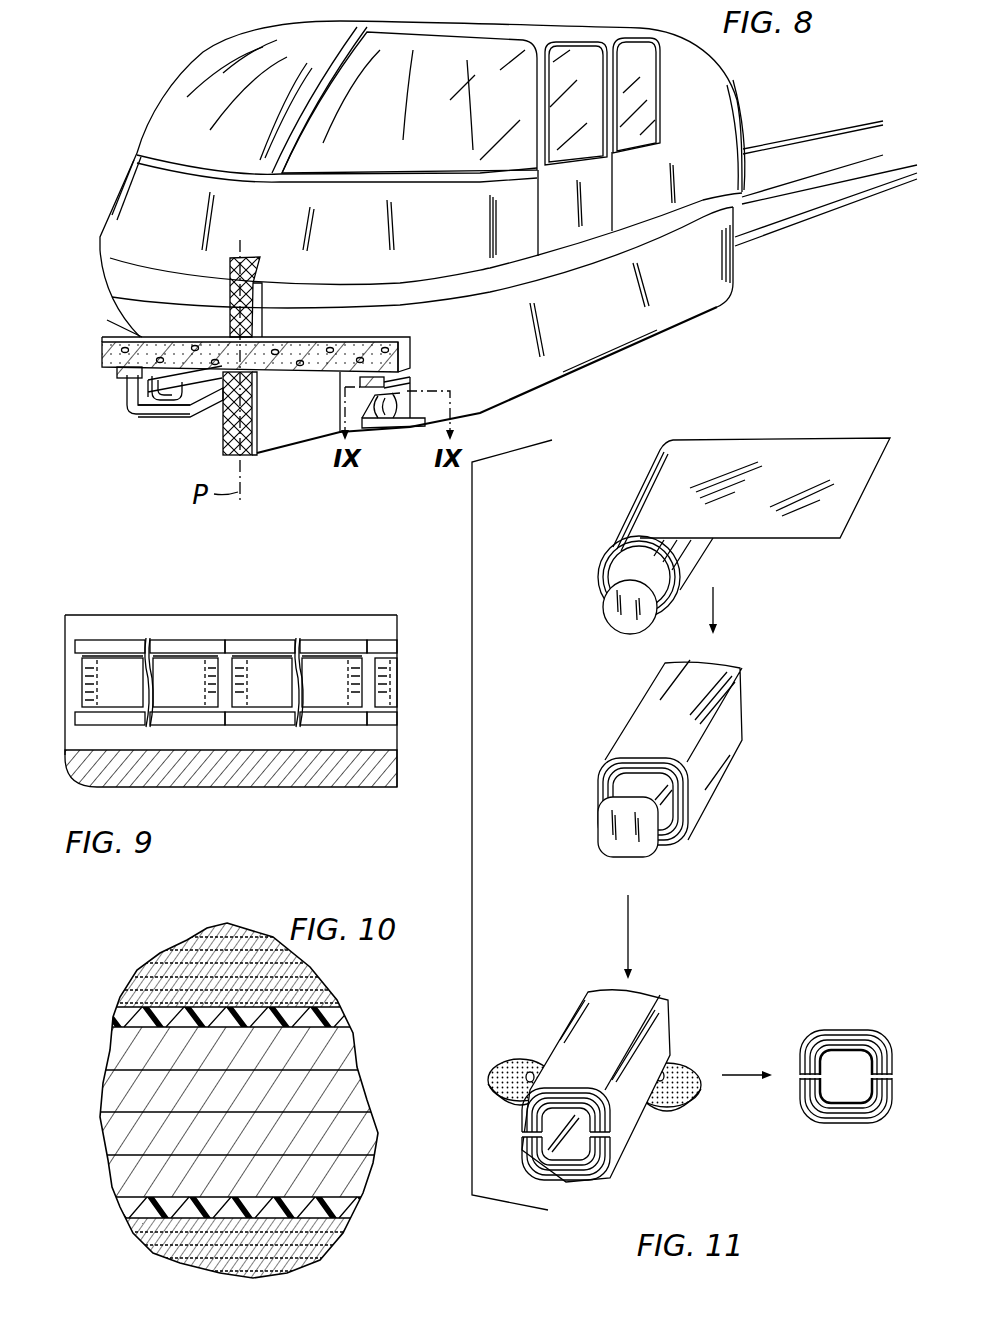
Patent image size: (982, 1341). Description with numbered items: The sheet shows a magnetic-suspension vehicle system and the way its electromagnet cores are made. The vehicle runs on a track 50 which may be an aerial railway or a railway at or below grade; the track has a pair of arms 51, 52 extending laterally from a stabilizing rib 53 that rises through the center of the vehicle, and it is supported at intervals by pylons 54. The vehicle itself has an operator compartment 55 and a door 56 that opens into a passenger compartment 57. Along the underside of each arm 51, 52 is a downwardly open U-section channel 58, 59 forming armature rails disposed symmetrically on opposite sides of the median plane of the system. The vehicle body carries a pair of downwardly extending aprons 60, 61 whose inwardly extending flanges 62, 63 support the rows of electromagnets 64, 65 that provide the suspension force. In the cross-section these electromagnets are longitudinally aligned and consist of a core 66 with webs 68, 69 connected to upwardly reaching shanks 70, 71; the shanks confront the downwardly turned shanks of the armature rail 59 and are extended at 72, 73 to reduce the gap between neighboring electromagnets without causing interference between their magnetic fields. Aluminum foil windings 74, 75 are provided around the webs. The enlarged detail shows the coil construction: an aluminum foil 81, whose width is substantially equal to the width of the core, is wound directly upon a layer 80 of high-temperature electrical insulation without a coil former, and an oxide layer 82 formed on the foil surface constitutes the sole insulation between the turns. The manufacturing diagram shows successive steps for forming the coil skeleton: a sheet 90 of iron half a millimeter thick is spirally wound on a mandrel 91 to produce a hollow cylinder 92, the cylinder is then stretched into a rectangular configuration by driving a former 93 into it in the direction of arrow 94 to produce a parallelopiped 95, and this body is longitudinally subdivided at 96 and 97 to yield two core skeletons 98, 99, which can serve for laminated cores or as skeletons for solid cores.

In FIG. 8, the track 50 is at (822, 210).
In FIG. 8, the arm 51 is at (127, 337).
In FIG. 8, the arm 52 is at (368, 350).
In FIG. 8, the stabilizing rib 53 is at (805, 140).
In FIG. 8, the pylon 54 is at (263, 440).
In FIG. 8, the operator compartment 55 is at (172, 132).
In FIG. 8, the door 56 is at (597, 195).
In FIG. 8, the passenger compartment 57 is at (647, 118).
In FIG. 8, the U-section channel 58 is at (117, 372).
In FIG. 8, the U-section channel 59 is at (382, 392).
In FIG. 8, the apron 60 is at (127, 390).
In FIG. 8, the apron 61 is at (668, 317).
In FIG. 9, the apron 61 is at (367, 780).
In FIG. 8, the flange 62 is at (165, 417).
In FIG. 8, the flange 63 is at (380, 428).
In FIG. 9, the flange 63 is at (373, 615).
In FIG. 9, the electromagnet 64 is at (155, 628).
In FIG. 9, the electromagnet 65 is at (303, 628).
In FIG. 9, the core 66 is at (113, 658).
In FIG. 9, the web 68 is at (77, 677).
In FIG. 9, the web 69 is at (348, 680).
In FIG. 9, the shank 70 is at (162, 723).
In FIG. 9, the shank 71 is at (317, 723).
In FIG. 9, the shank extension 72 is at (202, 645).
In FIG. 9, the shank extension 73 is at (242, 645).
In FIG. 9, the aluminum foil winding 74 is at (113, 690).
In FIG. 9, the aluminum foil winding 75 is at (273, 692).
In FIG. 10, the layer of high-temperature electrical insulation 80 is at (117, 1007).
In FIG. 10, the aluminum foil 81 is at (157, 960).
In FIG. 10, the oxide layer 82 is at (175, 945).
In FIG. 11, the sheet of iron 90 is at (862, 440).
In FIG. 11, the mandrel 91 is at (606, 612).
In FIG. 11, the hollow cylinder 92 is at (613, 548).
In FIG. 11, the former 93 is at (705, 785).
In FIG. 11, the arrow 94 is at (606, 866).
In FIG. 11, the parallelopiped 95 is at (615, 1150).
In FIG. 11, the subdivision location 96 is at (535, 1067).
In FIG. 11, the subdivision location 97 is at (667, 1103).
In FIG. 11, the core skeleton 98 is at (853, 1030).
In FIG. 11, the core skeleton 99 is at (852, 1125).